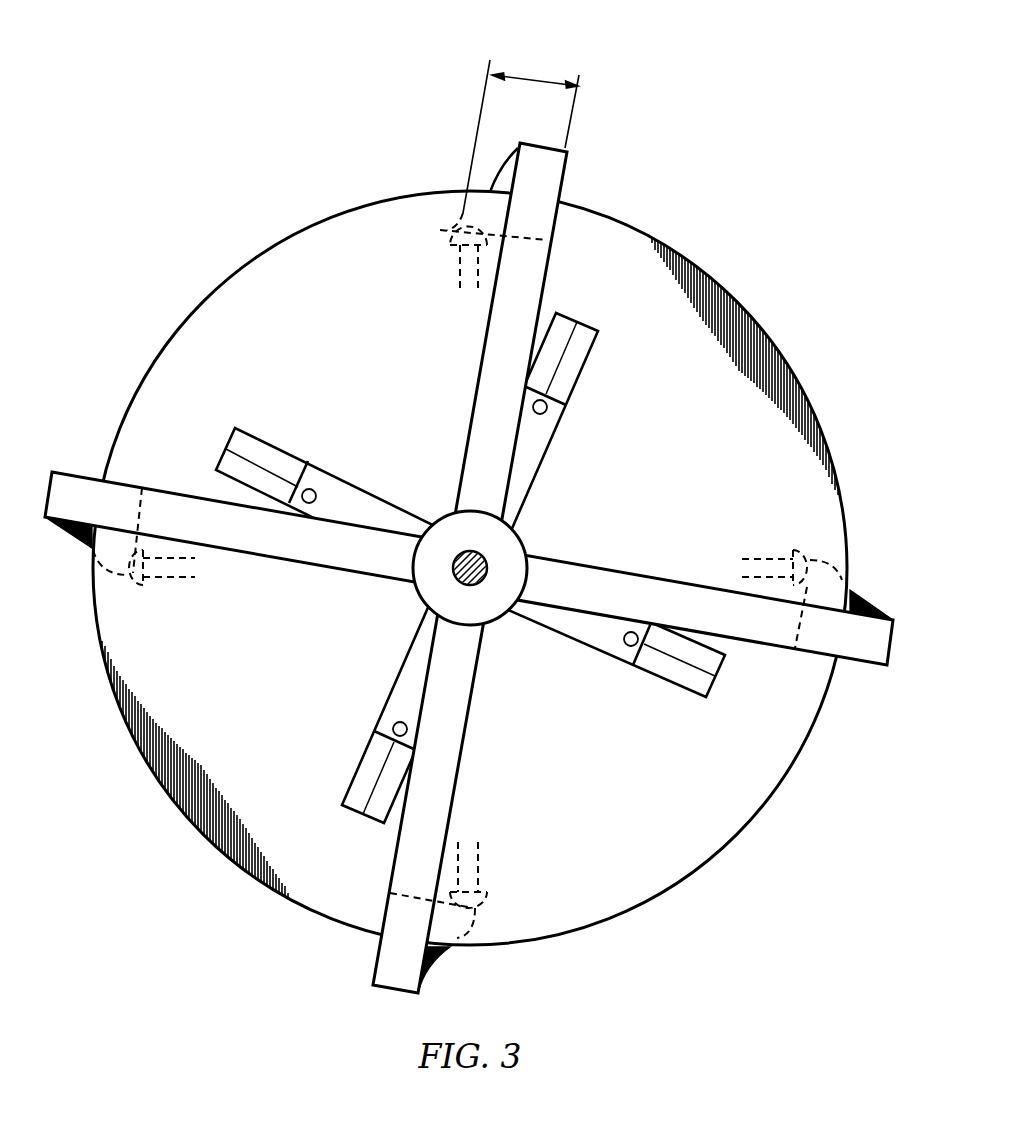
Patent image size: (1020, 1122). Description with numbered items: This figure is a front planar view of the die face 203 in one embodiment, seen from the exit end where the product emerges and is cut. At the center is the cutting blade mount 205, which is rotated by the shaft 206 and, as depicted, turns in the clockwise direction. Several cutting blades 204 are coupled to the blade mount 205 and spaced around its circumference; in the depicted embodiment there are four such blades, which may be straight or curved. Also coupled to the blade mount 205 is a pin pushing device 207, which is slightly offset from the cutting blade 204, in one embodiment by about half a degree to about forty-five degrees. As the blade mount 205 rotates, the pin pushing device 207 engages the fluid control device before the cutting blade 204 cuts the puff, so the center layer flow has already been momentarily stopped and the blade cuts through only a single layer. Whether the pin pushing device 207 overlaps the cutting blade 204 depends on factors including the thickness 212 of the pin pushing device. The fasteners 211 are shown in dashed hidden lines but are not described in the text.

The die face 203 is at (258, 253).
The cutting blade 204 is at (557, 317).
The cutting blade mount 205 is at (435, 522).
The shaft 206 is at (452, 573).
The pin pushing device 207 is at (565, 178).
The bolt 211 is at (457, 230).
The thickness 212 is at (532, 77).